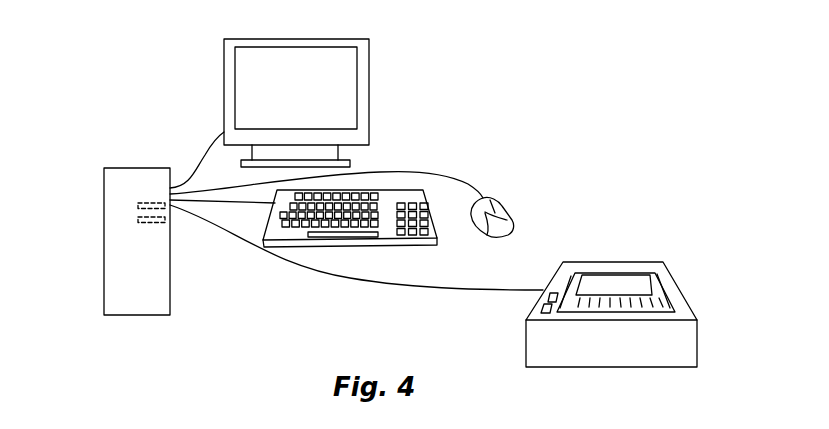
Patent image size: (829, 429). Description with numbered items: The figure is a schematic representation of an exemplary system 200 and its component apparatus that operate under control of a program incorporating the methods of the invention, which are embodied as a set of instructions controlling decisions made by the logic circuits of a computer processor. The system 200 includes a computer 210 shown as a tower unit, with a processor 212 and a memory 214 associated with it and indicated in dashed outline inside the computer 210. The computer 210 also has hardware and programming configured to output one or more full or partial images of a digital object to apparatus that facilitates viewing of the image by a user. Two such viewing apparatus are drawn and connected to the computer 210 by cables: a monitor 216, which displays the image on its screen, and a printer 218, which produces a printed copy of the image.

The system 200 is at (456, 120).
The computer 210 is at (117, 168).
The processor 212 is at (133, 202).
The memory 214 is at (133, 217).
The monitor 216 is at (343, 85).
The printer 218 is at (682, 348).